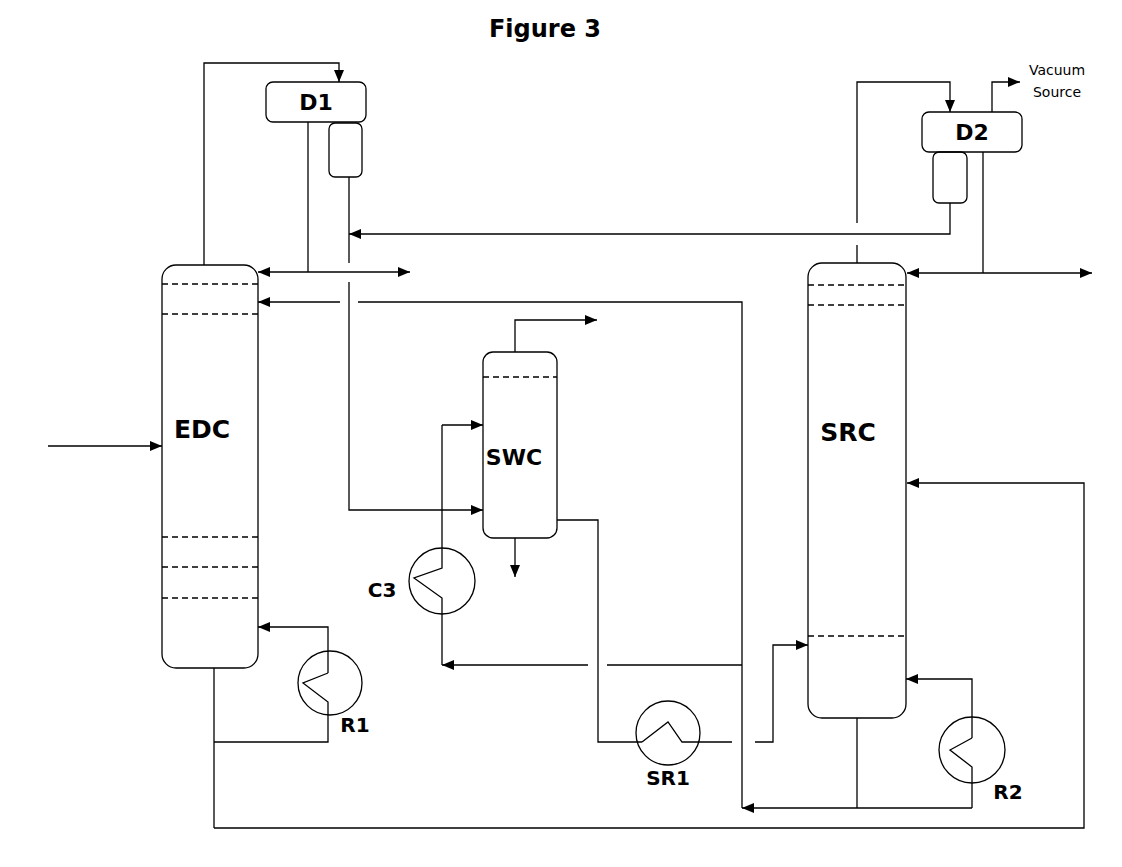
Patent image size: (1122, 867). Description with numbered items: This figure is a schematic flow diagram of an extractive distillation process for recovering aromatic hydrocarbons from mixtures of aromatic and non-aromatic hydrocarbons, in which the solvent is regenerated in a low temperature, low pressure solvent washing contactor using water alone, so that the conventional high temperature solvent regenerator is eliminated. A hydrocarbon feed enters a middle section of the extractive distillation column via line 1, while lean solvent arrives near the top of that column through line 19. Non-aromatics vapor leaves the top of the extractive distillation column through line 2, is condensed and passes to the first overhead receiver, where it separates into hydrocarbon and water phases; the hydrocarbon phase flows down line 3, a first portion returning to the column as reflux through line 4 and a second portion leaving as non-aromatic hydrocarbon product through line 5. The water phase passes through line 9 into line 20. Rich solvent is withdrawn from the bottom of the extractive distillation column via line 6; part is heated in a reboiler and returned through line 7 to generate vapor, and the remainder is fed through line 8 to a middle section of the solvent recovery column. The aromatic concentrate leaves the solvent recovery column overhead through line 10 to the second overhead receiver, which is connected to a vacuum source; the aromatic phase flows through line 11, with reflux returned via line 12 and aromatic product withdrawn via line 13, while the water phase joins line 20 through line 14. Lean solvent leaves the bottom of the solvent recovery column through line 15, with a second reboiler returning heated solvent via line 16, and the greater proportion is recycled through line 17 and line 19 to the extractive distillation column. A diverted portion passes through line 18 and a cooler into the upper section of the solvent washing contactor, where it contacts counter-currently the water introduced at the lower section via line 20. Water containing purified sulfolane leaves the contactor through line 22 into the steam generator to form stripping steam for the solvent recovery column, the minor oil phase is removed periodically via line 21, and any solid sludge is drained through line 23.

The line 1 is at (105, 435).
The line 2 is at (263, 164).
The line 3 is at (300, 197).
The line 4 is at (283, 261).
The line 5 is at (370, 272).
The line 6 is at (203, 748).
The line 7 is at (293, 637).
The line 8 is at (649, 655).
The line 9 is at (359, 220).
The line 10 is at (887, 172).
The line 11 is at (997, 212).
The line 12 is at (945, 286).
The line 13 is at (1037, 286).
The line 14 is at (649, 218).
The line 15 is at (870, 763).
The line 16 is at (939, 698).
The line 17 is at (857, 797).
The line 18 is at (592, 654).
The line 19 is at (500, 544).
The line 20 is at (403, 396).
The line 21 is at (571, 334).
The line 22 is at (599, 631).
The line 23 is at (515, 570).